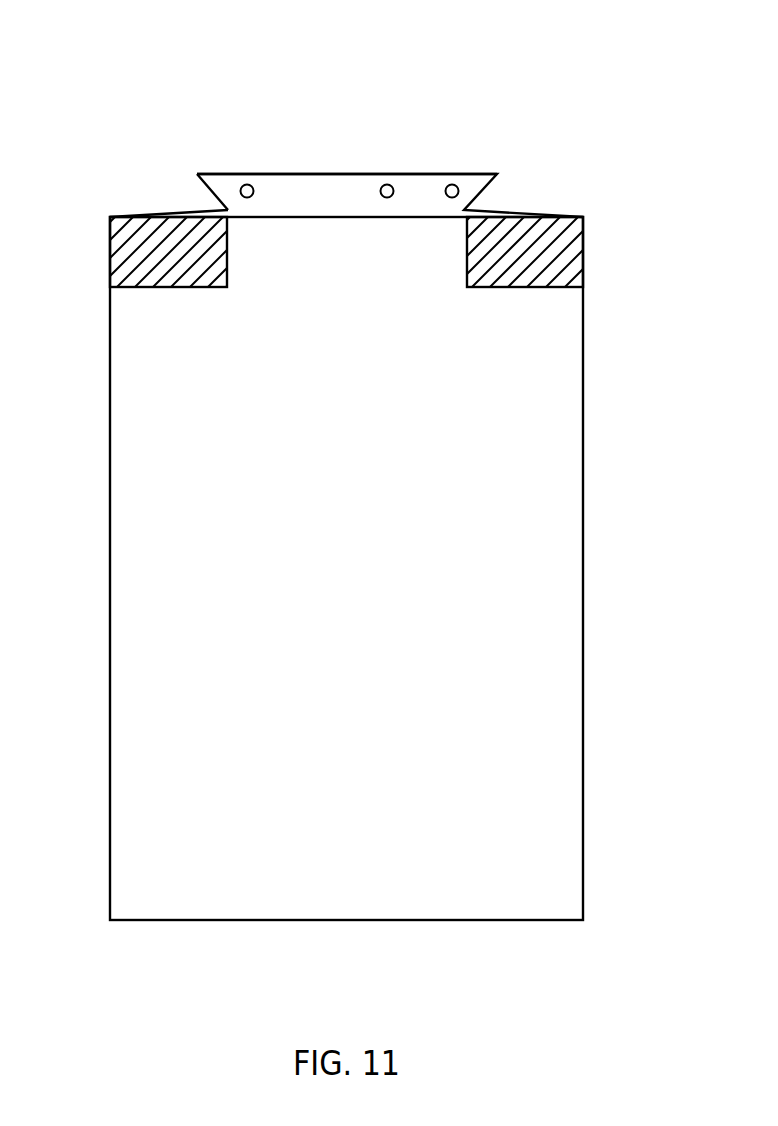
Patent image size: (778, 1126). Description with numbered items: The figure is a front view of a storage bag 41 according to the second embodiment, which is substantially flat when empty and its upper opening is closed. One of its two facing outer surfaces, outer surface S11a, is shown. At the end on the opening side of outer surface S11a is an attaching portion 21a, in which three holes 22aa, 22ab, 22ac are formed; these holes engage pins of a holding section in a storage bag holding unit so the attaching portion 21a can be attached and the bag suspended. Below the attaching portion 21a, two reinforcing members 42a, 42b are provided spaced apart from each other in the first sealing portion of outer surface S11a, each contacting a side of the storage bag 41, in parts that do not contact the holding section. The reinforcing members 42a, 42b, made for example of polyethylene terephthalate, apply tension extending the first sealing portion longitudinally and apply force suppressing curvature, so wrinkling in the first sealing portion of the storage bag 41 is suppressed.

The storage bag 41 is at (392, 60).
The attaching portion 21a is at (315, 174).
The hole 22aa is at (247, 184).
The hole 22ab is at (387, 184).
The hole 22ac is at (451, 184).
The reinforcing member 42a is at (168, 252).
The reinforcing member 42b is at (524, 252).
The outer surface S11a is at (158, 592).